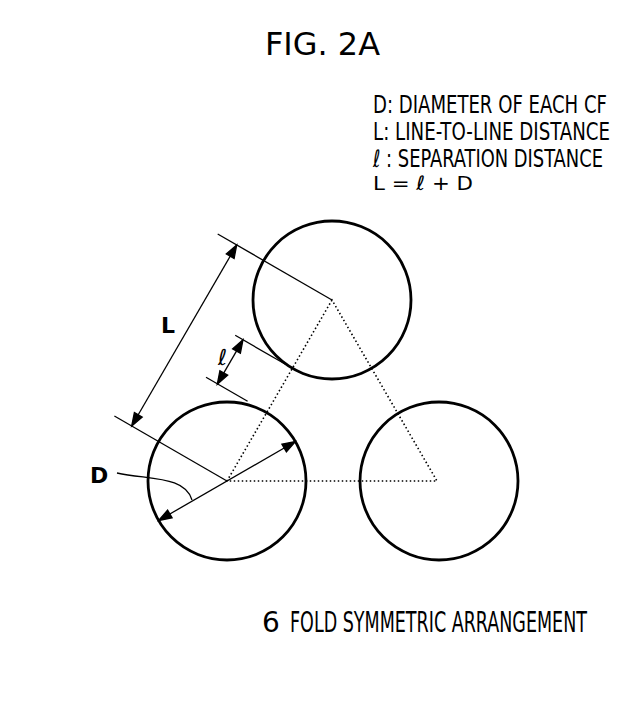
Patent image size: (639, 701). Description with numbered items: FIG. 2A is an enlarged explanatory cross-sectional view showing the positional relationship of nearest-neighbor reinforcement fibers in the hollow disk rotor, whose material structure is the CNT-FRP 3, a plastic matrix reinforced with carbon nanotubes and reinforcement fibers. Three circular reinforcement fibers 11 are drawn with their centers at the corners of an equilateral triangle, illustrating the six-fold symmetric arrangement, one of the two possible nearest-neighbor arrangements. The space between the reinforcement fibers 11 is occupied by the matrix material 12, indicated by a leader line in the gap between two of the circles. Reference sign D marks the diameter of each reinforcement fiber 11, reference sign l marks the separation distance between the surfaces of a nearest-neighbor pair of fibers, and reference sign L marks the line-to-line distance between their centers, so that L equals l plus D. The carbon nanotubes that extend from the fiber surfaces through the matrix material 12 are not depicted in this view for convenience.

The CNT-FRP 3 is at (163, 229).
The reinforcement fibers 11 is at (303, 226).
The matrix material 12 is at (410, 375).